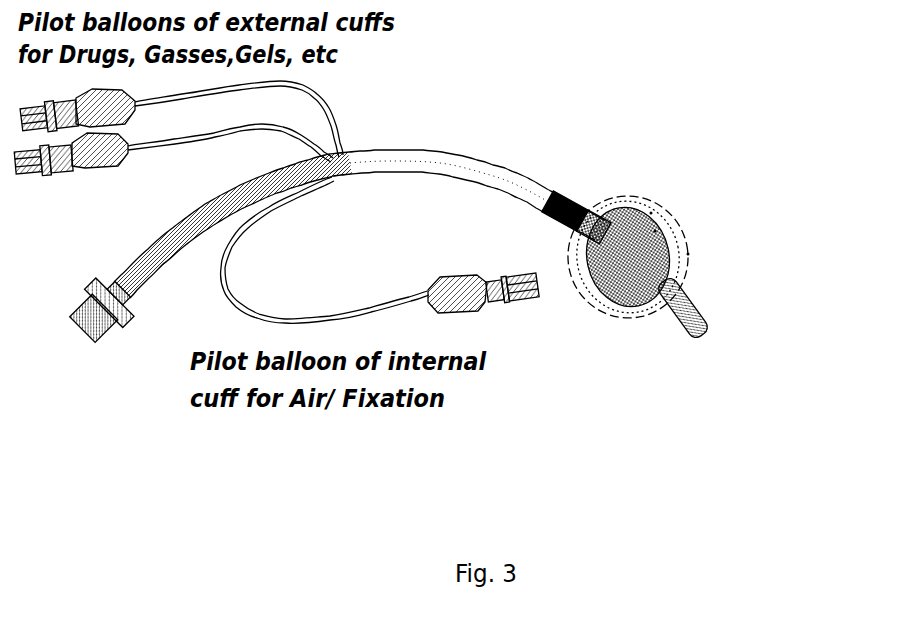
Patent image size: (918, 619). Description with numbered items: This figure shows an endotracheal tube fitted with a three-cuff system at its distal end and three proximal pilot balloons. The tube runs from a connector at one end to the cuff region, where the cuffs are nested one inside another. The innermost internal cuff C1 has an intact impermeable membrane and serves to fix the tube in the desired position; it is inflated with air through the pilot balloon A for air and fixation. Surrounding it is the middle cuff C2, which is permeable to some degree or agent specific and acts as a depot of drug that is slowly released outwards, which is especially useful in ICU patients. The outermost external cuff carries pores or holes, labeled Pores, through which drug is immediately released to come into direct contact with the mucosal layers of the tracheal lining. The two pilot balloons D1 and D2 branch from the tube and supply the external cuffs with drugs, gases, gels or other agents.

The pilot balloon D2 is at (181, 119).
The pilot balloon D1 is at (173, 151).
The pilot balloon A is at (380, 250).
The internal cuff C1 is at (613, 287).
The middle cuff C2 is at (610, 203).
The pores Pores is at (651, 213).